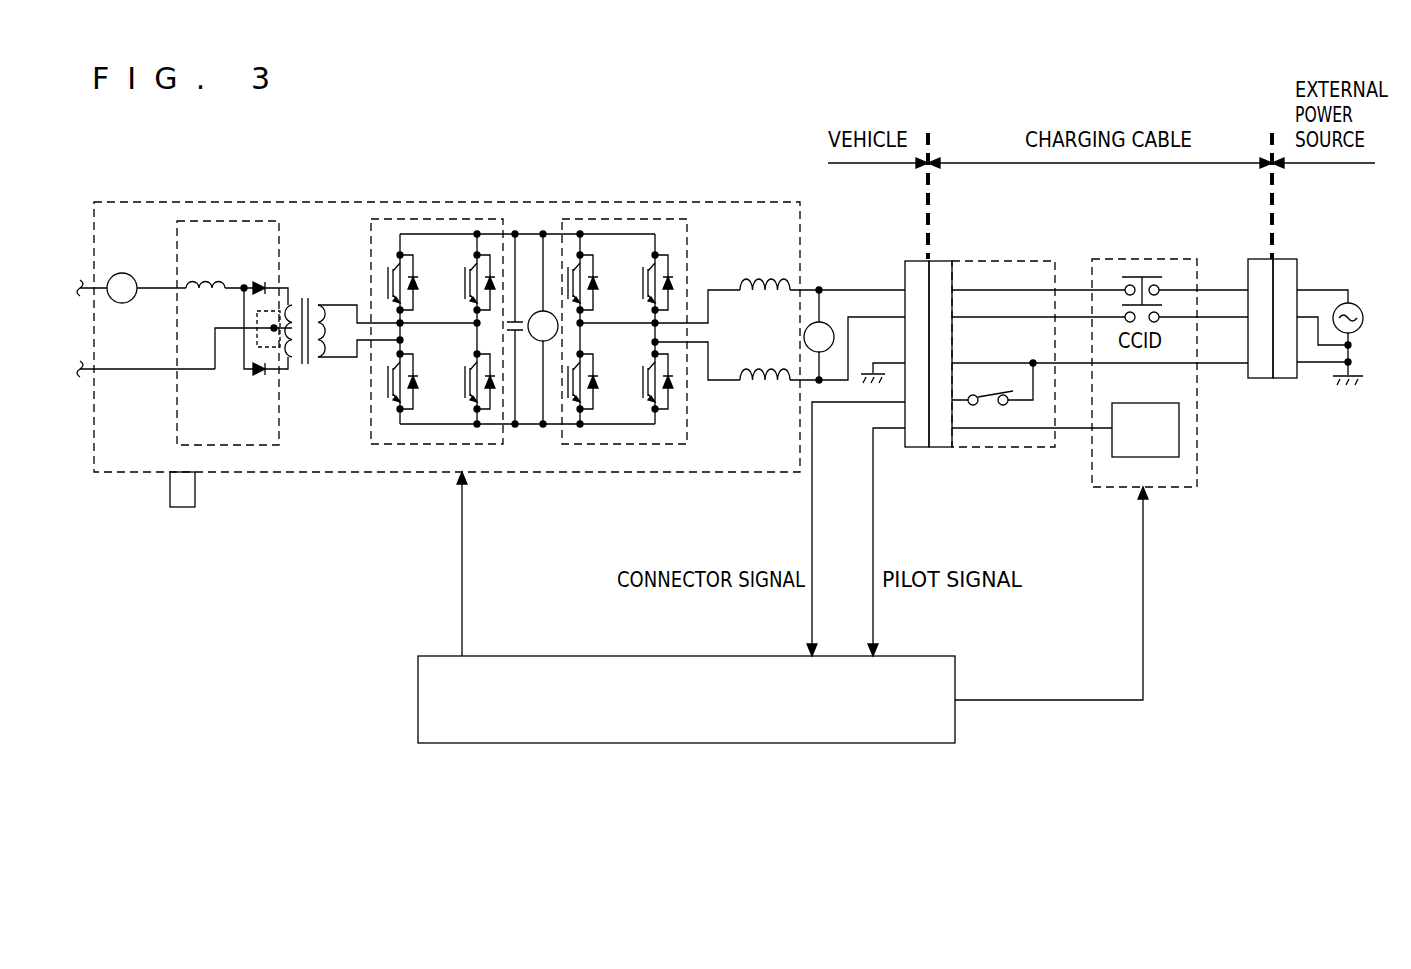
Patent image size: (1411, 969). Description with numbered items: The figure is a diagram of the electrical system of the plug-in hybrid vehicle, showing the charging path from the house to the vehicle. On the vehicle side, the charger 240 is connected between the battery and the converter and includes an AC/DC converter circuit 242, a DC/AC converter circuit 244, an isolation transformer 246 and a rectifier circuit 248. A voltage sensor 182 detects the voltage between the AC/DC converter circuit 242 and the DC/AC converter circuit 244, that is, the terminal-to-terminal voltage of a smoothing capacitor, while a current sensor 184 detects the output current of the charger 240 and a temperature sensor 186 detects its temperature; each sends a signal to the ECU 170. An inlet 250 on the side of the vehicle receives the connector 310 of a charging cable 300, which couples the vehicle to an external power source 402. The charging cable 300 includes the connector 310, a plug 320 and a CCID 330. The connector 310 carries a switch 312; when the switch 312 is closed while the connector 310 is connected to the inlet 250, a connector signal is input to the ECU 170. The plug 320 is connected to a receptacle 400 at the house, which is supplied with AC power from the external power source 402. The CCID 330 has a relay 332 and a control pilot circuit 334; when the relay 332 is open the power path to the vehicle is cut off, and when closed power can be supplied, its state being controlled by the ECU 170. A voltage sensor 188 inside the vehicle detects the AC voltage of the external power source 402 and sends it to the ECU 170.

The ECU 170 is at (837, 743).
The voltage sensor 182 is at (541, 341).
The current sensor 184 is at (122, 272).
The temperature sensor 186 is at (180, 507).
The voltage sensor 188 is at (823, 322).
The charger 240 is at (375, 473).
The AC/DC converter circuit 242 is at (612, 445).
The DC/AC converter circuit 244 is at (494, 445).
The isolation transformer 246 is at (318, 372).
The rectifier circuit 248 is at (233, 445).
The inlet 250 is at (914, 261).
The charging cable 300 is at (1059, 252).
The connector 310 is at (938, 261).
The switch 312 is at (988, 411).
The plug 320 is at (1264, 260).
The CCID 330 is at (1185, 489).
The relay 332 is at (1114, 268).
The control pilot circuit 334 is at (1179, 430).
The receptacle 400 is at (1280, 378).
The external power source 402 is at (1350, 303).